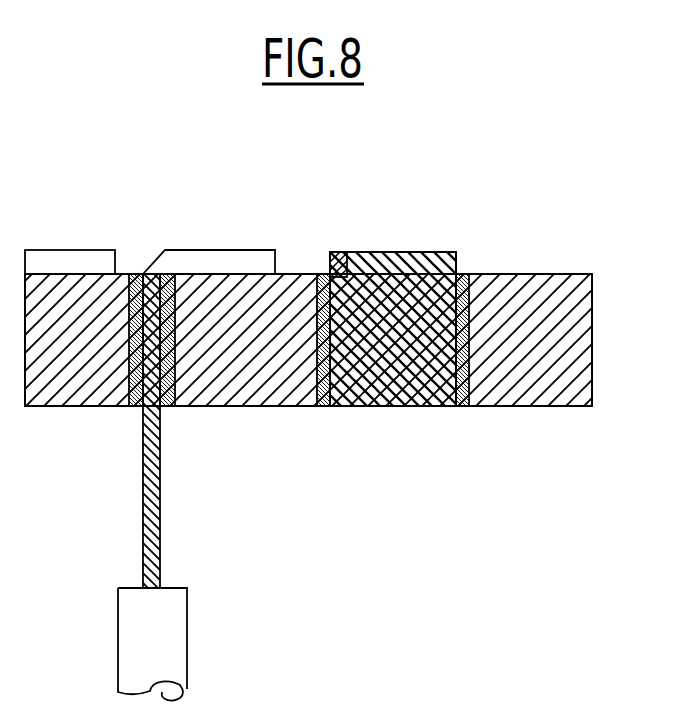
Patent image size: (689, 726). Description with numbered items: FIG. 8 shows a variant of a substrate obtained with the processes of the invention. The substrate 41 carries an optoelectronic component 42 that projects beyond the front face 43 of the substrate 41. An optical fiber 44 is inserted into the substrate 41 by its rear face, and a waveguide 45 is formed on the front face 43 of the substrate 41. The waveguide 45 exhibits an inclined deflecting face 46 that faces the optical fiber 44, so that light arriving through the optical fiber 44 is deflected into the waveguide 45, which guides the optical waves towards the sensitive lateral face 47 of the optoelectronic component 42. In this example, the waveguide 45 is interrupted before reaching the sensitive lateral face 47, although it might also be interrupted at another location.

The substrate 41 is at (545, 335).
The optoelectronic component 42 is at (395, 303).
The front face 43 is at (525, 274).
The optical fiber 44 is at (150, 517).
The waveguide 45 is at (217, 263).
The inclined deflecting face 46 is at (157, 256).
The sensitive lateral face 47 is at (328, 267).